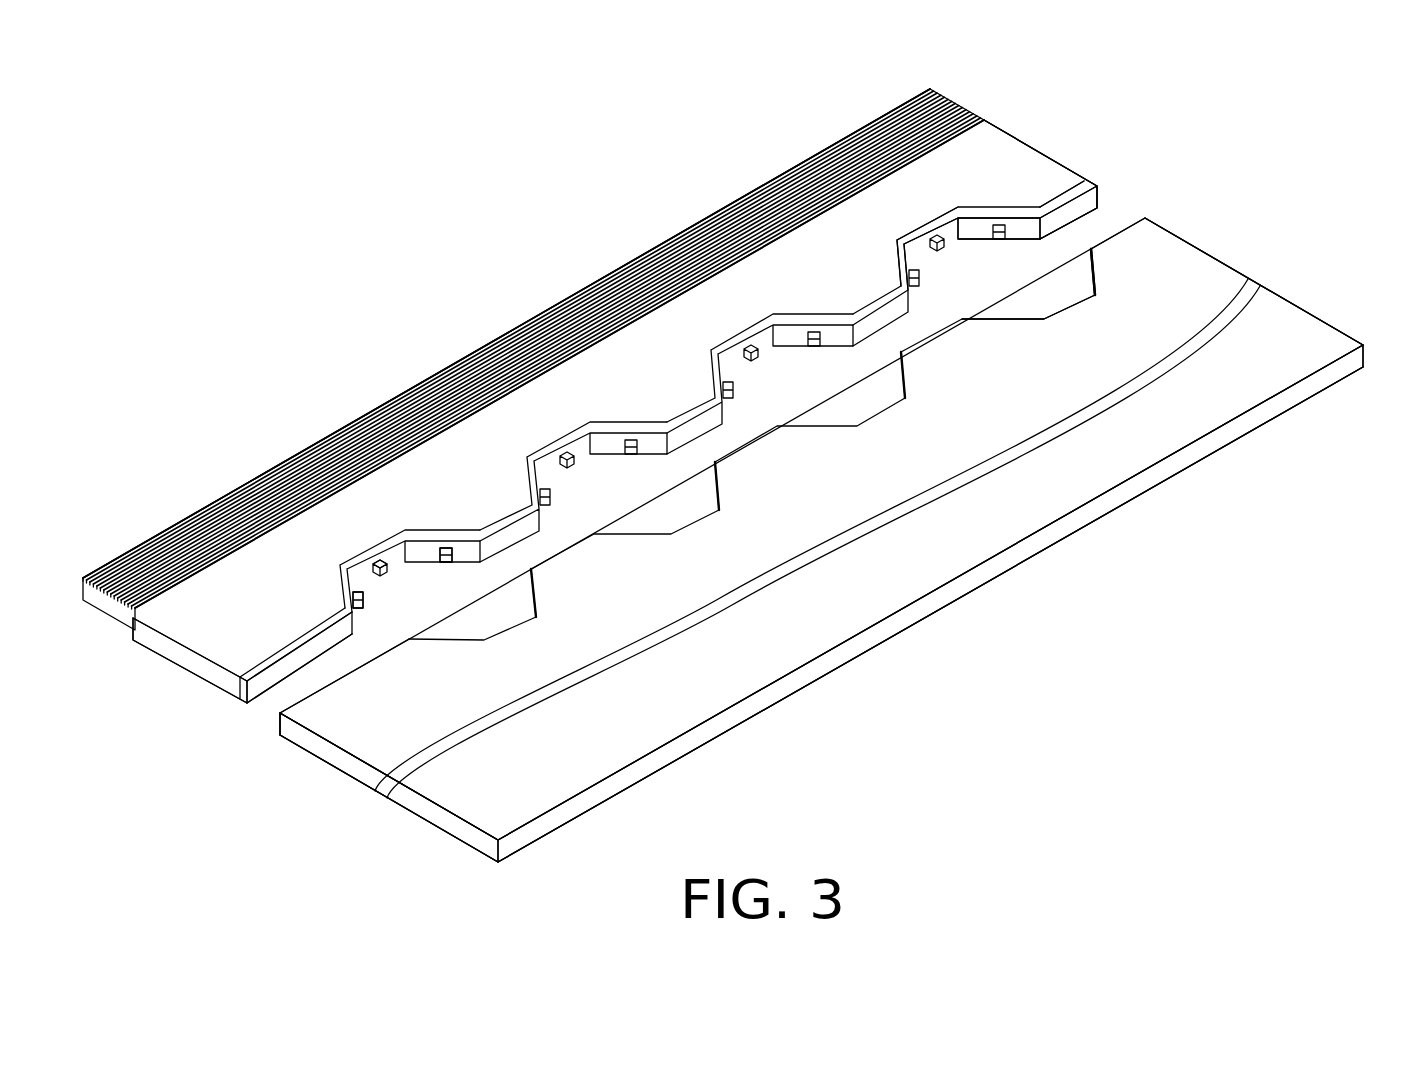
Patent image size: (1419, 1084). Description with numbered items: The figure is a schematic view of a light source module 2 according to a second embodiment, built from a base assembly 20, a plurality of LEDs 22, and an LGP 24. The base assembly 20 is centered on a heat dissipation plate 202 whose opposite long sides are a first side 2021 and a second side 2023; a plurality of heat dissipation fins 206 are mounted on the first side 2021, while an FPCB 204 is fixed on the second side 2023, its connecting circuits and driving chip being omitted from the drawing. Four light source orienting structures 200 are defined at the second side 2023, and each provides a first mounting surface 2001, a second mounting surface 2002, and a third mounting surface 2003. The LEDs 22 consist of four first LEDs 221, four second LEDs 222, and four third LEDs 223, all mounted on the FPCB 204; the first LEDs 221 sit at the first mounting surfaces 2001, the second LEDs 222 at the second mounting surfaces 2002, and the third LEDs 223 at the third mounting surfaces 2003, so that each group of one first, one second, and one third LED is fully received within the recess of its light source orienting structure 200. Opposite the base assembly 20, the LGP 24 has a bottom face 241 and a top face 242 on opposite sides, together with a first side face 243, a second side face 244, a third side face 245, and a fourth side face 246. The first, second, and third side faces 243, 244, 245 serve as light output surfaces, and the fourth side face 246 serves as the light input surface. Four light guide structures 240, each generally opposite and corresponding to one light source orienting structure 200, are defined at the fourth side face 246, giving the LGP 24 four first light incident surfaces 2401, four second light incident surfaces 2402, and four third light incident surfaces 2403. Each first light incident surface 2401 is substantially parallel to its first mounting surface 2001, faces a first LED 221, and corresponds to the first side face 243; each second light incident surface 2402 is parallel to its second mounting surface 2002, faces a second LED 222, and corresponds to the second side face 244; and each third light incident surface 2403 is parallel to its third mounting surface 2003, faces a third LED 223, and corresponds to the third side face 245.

The light source module 2 is at (288, 205).
The base assembly 20 is at (1167, 151).
The LEDs 22 is at (493, 277).
The LGP 24 is at (1330, 278).
The light source orienting structures 200 is at (690, 234).
The heat dissipation plate 202 is at (1018, 160).
The FPCB 204 is at (1070, 193).
The heat dissipation fins 206 is at (983, 222).
The first LEDs 221 is at (425, 418).
The second LEDs 222 is at (563, 452).
The third LEDs 223 is at (628, 440).
The light guide structures 240 is at (652, 700).
The bottom face 241 is at (528, 850).
The top face 242 is at (590, 759).
The first side face 243 is at (1212, 242).
The second side face 244 is at (1312, 378).
The third side face 245 is at (352, 765).
The fourth side face 246 is at (277, 725).
The first mounting surface 2001 is at (912, 262).
The second mounting surface 2002 is at (950, 233).
The third mounting surface 2003 is at (918, 103).
The first side 2021 is at (177, 620).
The second side 2023 is at (237, 650).
The first light incident surfaces 2401 is at (1092, 278).
The second light incident surfaces 2402 is at (1068, 320).
The third light incident surfaces 2403 is at (993, 332).